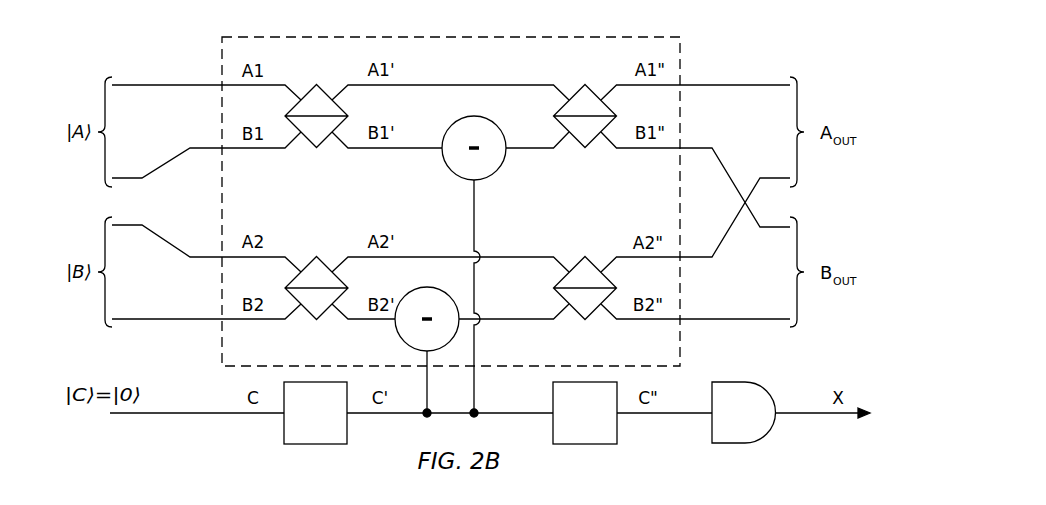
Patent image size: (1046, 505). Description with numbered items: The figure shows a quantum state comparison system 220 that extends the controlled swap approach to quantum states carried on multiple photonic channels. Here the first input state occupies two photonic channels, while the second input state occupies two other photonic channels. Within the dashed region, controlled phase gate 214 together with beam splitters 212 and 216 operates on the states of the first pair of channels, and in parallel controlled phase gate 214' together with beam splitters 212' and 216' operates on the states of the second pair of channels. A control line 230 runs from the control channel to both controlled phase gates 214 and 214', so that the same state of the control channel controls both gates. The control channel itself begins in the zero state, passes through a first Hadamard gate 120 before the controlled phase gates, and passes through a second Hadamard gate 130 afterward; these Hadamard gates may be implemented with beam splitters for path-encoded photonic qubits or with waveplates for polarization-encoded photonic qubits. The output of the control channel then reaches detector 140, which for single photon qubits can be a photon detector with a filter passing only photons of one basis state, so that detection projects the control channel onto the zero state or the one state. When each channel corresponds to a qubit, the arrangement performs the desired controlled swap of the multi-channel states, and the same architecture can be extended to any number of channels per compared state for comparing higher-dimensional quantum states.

The QSC system 220 is at (155, 51).
The beam splitter 212 is at (321, 100).
The beam splitter 212' is at (324, 271).
The controlled phase gate 214 is at (462, 135).
The controlled phase gate 214' is at (413, 306).
The beam splitter 216 is at (580, 100).
The beam splitter 216' is at (578, 271).
The control line 230 is at (438, 221).
The Hadamard gate 120 is at (332, 434).
The Hadamard gate 130 is at (570, 434).
The detector 140 is at (728, 423).